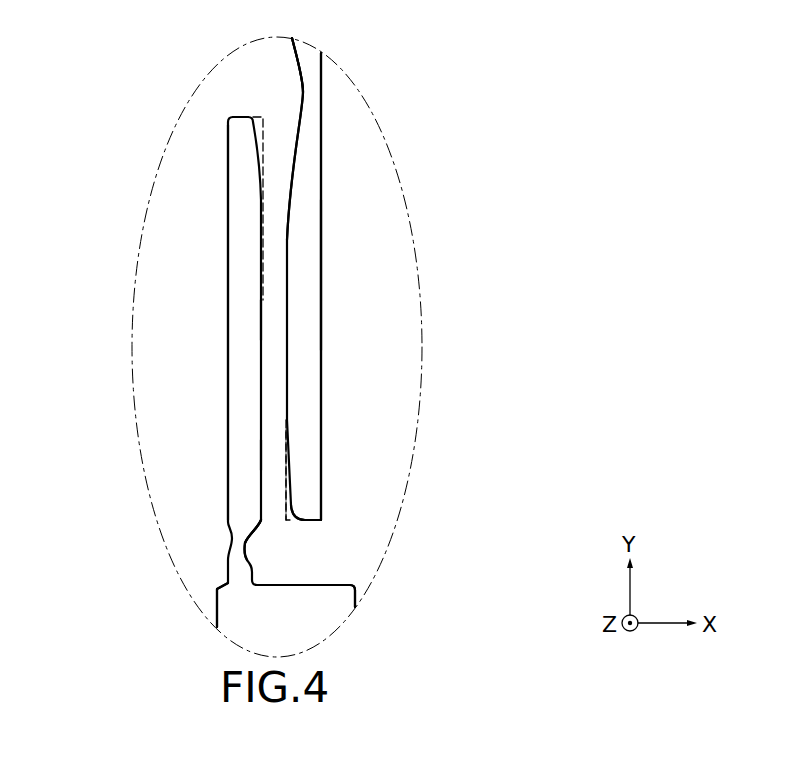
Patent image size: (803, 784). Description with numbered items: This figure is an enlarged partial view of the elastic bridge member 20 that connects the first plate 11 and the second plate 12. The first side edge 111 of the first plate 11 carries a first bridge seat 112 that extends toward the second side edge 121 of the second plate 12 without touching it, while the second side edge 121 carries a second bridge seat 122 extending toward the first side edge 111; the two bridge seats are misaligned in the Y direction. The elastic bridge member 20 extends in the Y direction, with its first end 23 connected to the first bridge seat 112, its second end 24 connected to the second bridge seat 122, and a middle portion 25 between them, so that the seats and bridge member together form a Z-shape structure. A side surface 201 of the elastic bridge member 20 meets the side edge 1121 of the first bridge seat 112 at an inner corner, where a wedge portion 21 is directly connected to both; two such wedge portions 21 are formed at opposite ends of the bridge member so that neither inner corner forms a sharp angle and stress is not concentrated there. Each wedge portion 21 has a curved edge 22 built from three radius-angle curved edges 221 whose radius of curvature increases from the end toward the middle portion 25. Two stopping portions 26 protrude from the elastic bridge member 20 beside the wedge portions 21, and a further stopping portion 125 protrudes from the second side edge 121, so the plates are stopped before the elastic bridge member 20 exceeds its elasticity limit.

The first plate 11 is at (390, 373).
The first side edge 111 is at (320, 273).
The first bridge seat 112 is at (303, 573).
The side edge 1121 is at (293, 522).
The second plate 12 is at (163, 335).
The second side edge 121 is at (228, 312).
The second bridge seat 122 is at (250, 98).
The stopping portion 125 is at (222, 631).
The elastic bridge member 20 is at (287, 308).
The side surface 201 is at (272, 452).
The wedge portion 21 is at (262, 138).
The curved edge 22 is at (253, 128).
The radius-angle curved edge 221 is at (288, 438).
The first end 23 is at (270, 482).
The second end 24 is at (278, 127).
The middle portion 25 is at (272, 320).
The stopping portion 26 is at (303, 95).